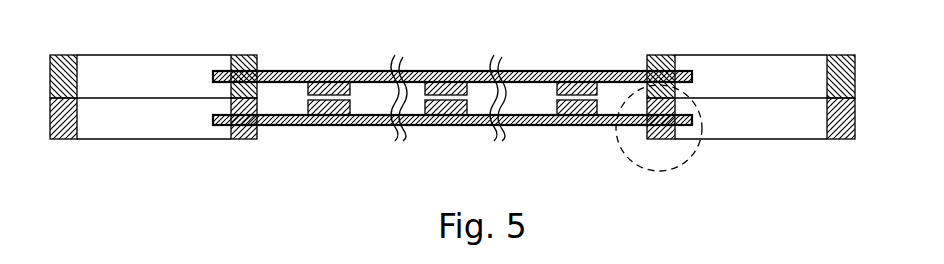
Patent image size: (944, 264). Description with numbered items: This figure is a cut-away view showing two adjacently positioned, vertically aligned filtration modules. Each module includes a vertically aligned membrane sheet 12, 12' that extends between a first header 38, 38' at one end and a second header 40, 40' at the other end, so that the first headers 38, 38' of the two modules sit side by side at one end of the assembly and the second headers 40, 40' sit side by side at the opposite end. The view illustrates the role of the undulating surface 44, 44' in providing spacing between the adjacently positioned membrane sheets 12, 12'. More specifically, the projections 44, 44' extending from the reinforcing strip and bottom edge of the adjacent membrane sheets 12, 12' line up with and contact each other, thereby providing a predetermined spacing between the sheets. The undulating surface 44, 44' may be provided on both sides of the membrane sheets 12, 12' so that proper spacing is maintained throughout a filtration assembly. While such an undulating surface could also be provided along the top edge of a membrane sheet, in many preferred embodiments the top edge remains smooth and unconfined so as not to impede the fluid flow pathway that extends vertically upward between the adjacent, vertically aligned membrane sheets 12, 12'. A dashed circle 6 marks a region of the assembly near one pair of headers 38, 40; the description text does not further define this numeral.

The detail region of connection 6 is at (627, 166).
The membrane sheet 12 is at (452, 148).
The membrane sheet 12' is at (452, 51).
The first header 38 is at (226, 140).
The first header 38' is at (222, 57).
The second header 40 is at (743, 140).
The second header 40' is at (743, 59).
The undulating surface 44 is at (452, 141).
The undulating surface 44' is at (452, 57).